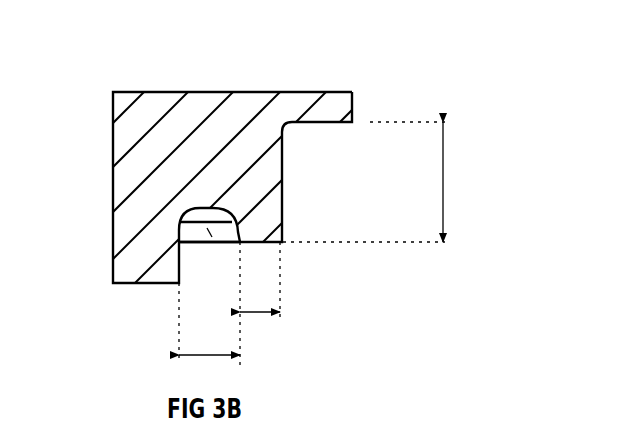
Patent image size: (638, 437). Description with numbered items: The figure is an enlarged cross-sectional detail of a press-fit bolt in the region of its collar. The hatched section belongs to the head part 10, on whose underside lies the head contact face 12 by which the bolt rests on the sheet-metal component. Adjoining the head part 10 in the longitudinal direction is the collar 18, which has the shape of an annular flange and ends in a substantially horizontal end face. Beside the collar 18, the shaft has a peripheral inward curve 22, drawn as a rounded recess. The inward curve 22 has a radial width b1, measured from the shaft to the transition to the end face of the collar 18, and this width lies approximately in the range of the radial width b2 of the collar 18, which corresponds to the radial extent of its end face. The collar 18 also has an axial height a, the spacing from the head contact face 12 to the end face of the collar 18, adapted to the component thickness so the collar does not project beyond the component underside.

The head part 10 is at (182, 120).
The head contact face 12 is at (320, 124).
The collar 18 is at (257, 225).
The inward curve 22 is at (210, 243).
The axial height a is at (443, 186).
The radial width of the inward curve b1 is at (207, 357).
The radial width of the collar b2 is at (258, 313).